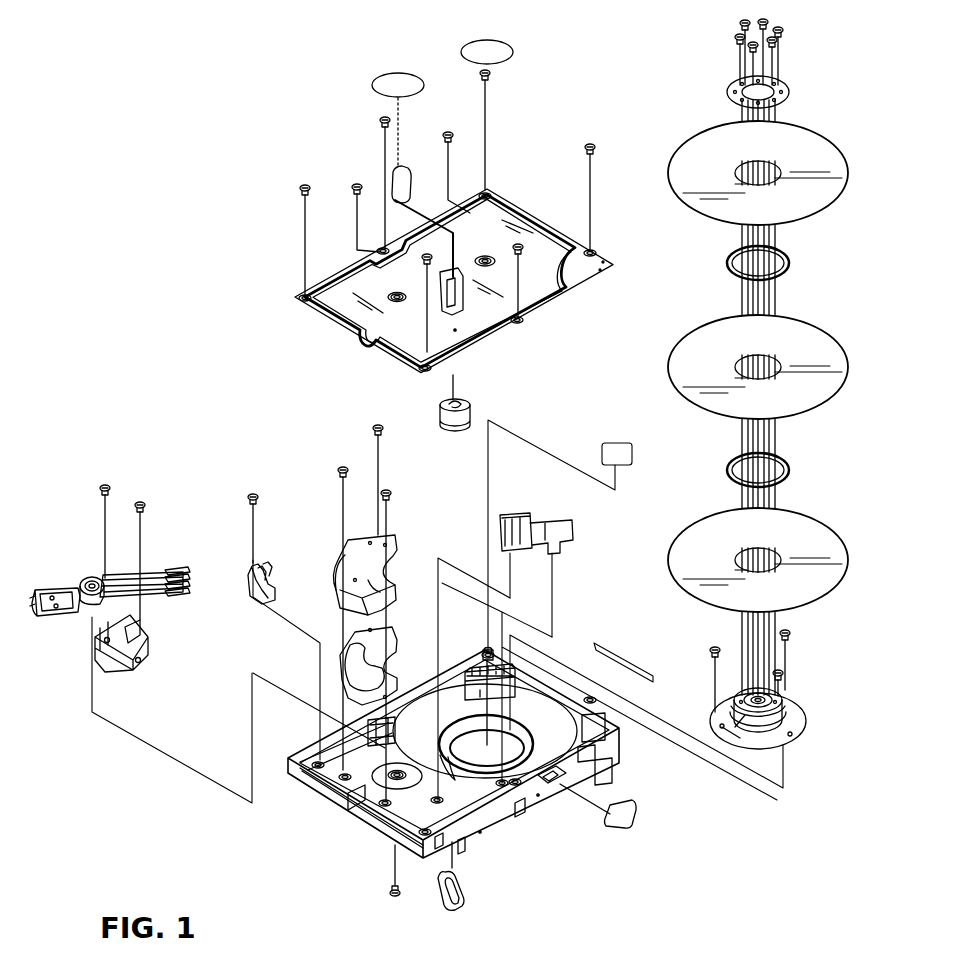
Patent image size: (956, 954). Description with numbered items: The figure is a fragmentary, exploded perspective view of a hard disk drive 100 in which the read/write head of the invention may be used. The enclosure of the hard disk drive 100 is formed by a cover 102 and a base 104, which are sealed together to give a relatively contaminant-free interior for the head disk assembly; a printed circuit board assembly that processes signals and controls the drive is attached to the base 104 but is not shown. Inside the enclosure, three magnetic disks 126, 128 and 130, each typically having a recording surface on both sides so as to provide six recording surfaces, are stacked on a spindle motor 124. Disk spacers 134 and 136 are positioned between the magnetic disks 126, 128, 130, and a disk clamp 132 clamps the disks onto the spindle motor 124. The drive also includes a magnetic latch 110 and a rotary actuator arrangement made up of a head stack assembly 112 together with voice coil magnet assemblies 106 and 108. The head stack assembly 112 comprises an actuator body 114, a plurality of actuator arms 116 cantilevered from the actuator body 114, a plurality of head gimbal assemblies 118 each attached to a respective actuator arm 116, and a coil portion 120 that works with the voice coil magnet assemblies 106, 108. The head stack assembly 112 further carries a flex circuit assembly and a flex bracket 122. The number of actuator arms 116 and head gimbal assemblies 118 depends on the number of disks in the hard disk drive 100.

The hard disk drive 100 is at (178, 256).
The cover 102 is at (599, 282).
The base 104 is at (500, 832).
The voice coil magnet assembly 106 is at (334, 555).
The voice coil magnet assembly 108 is at (346, 663).
The magnetic latch 110 is at (275, 600).
The head stack assembly 112 is at (90, 538).
The actuator body 114 is at (82, 576).
The actuator arms 116 is at (120, 576).
The head gimbal assemblies 118 is at (178, 566).
The coil portion 120 is at (48, 626).
The flex bracket 122 is at (148, 643).
The spindle motor 124 is at (806, 718).
The magnetic disk 126 is at (681, 141).
The magnetic disk 128 is at (681, 345).
The magnetic disk 130 is at (678, 542).
The disk clamp 132 is at (727, 80).
The disk spacer 134 is at (727, 258).
The disk spacer 136 is at (725, 463).